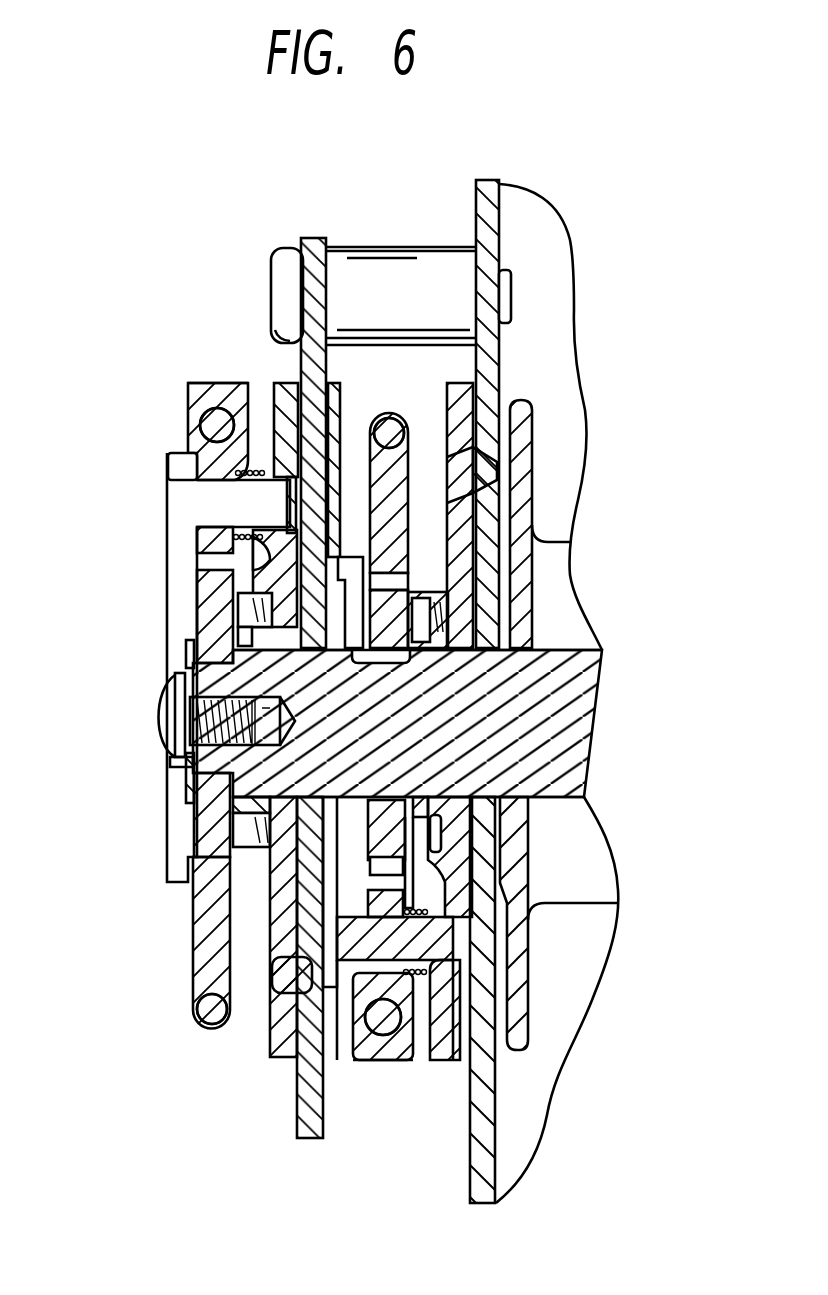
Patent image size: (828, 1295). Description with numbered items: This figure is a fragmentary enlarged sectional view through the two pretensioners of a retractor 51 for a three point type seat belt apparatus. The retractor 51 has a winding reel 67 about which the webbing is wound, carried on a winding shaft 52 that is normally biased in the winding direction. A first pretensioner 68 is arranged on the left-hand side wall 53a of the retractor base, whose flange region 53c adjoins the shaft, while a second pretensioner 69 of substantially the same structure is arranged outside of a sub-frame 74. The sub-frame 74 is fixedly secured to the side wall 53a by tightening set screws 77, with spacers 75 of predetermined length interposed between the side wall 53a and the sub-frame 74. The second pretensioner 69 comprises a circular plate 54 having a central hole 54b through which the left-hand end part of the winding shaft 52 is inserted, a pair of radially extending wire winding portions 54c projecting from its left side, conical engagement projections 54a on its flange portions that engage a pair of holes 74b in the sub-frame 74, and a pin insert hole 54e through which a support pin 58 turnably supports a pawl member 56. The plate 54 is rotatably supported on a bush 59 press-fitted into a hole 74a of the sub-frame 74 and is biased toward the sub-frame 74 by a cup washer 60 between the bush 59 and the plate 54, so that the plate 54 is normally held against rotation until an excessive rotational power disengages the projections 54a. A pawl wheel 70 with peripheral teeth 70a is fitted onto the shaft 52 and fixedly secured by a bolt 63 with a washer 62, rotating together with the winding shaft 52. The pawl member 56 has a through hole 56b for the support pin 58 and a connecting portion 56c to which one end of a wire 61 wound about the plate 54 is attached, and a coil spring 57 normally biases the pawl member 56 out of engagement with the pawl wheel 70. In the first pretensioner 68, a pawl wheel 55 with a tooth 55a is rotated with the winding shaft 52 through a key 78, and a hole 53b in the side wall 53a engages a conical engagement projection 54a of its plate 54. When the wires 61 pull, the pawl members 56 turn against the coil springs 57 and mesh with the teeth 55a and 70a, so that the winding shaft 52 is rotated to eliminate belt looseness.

The retractor 51 is at (148, 271).
The winding shaft 52 is at (570, 677).
The side wall 53a is at (486, 205).
The hole 53b is at (497, 465).
The base portion 53c is at (533, 653).
The plate 54 is at (268, 1045).
The conical engagement projections 54a is at (532, 425).
The hole 54b is at (193, 810).
The wire winding portions 54c is at (352, 612).
The pin insert hole 54e is at (467, 957).
The pawl wheel 55 is at (470, 787).
The tooth 55a is at (413, 577).
The pawl member 56 is at (186, 391).
The through hole 56b is at (170, 453).
The connecting portion 56c is at (213, 383).
The coil spring 57 is at (276, 392).
The support pin 58 is at (170, 497).
The bush 59 is at (222, 592).
The cup washer 60 is at (240, 625).
The wire 61 is at (395, 412).
The washer 62 is at (188, 652).
The bolt 63 is at (160, 710).
The winding reel 67 is at (553, 605).
The first pretensioner 68 is at (345, 1020).
The second pretensioner 69 is at (375, 731).
The pawl wheel 70 is at (210, 818).
The teeth 70a is at (205, 570).
The sub-frame 74 is at (313, 238).
The hole 74a is at (172, 752).
The holes 74b is at (313, 992).
The spacers 75 is at (382, 262).
The set screws 77 is at (283, 262).
The key 78 is at (412, 658).